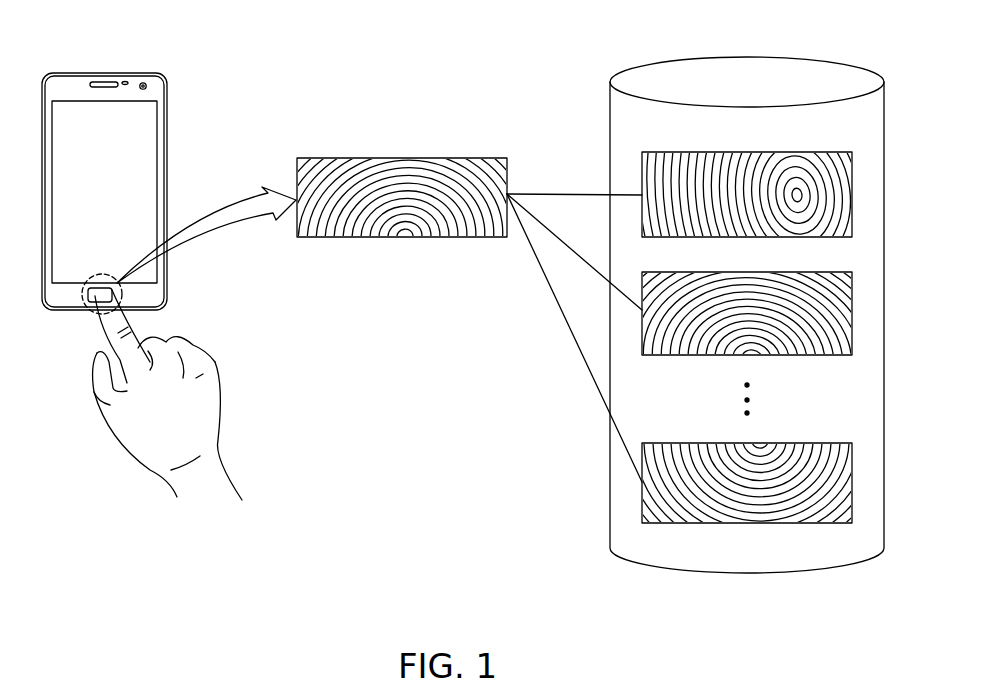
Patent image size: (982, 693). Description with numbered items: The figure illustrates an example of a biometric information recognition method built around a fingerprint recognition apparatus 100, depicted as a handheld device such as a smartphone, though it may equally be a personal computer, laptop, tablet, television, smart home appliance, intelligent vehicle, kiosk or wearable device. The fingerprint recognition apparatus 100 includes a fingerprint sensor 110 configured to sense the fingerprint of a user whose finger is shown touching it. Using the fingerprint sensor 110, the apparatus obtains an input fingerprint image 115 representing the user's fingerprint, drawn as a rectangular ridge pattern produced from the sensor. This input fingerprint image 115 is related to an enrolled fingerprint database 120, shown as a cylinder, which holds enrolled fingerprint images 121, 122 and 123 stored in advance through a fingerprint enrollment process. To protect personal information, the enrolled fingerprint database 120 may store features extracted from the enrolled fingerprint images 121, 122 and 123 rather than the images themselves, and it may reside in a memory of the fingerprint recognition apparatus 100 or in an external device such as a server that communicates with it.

The fingerprint recognition apparatus 100 is at (103, 73).
The fingerprint sensor 110 is at (82, 303).
The input fingerprint image 115 is at (400, 158).
The enrolled fingerprint database 120 is at (748, 57).
The enrolled fingerprint image 121 is at (783, 152).
The enrolled fingerprint image 122 is at (783, 272).
The enrolled fingerprint image 123 is at (783, 443).